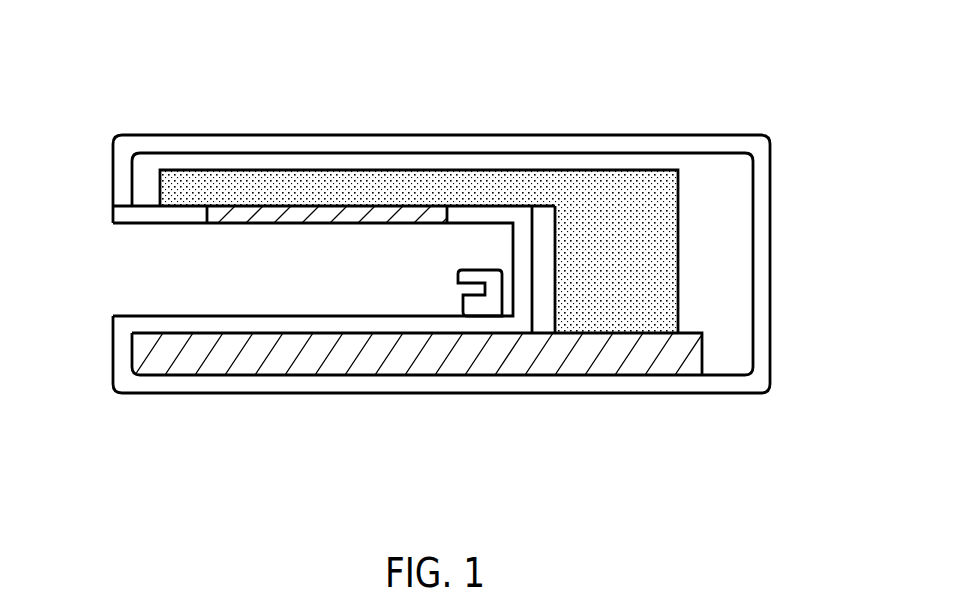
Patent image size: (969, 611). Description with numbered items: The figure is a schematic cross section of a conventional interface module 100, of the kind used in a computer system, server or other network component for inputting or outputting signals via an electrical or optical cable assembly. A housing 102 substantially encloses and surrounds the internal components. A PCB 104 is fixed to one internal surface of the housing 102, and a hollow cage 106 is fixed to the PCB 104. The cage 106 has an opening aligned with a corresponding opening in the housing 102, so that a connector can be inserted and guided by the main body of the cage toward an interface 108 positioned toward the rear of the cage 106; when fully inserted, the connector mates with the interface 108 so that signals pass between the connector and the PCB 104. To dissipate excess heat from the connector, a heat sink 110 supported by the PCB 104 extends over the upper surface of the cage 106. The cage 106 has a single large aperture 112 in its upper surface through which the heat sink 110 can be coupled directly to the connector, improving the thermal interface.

The interface module 100 is at (808, 129).
The housing 102 is at (168, 135).
The PCB 104 is at (702, 341).
The cage 106 is at (113, 218).
The interface 108 is at (485, 305).
The heat sink 110 is at (607, 170).
The aperture 112 is at (372, 206).